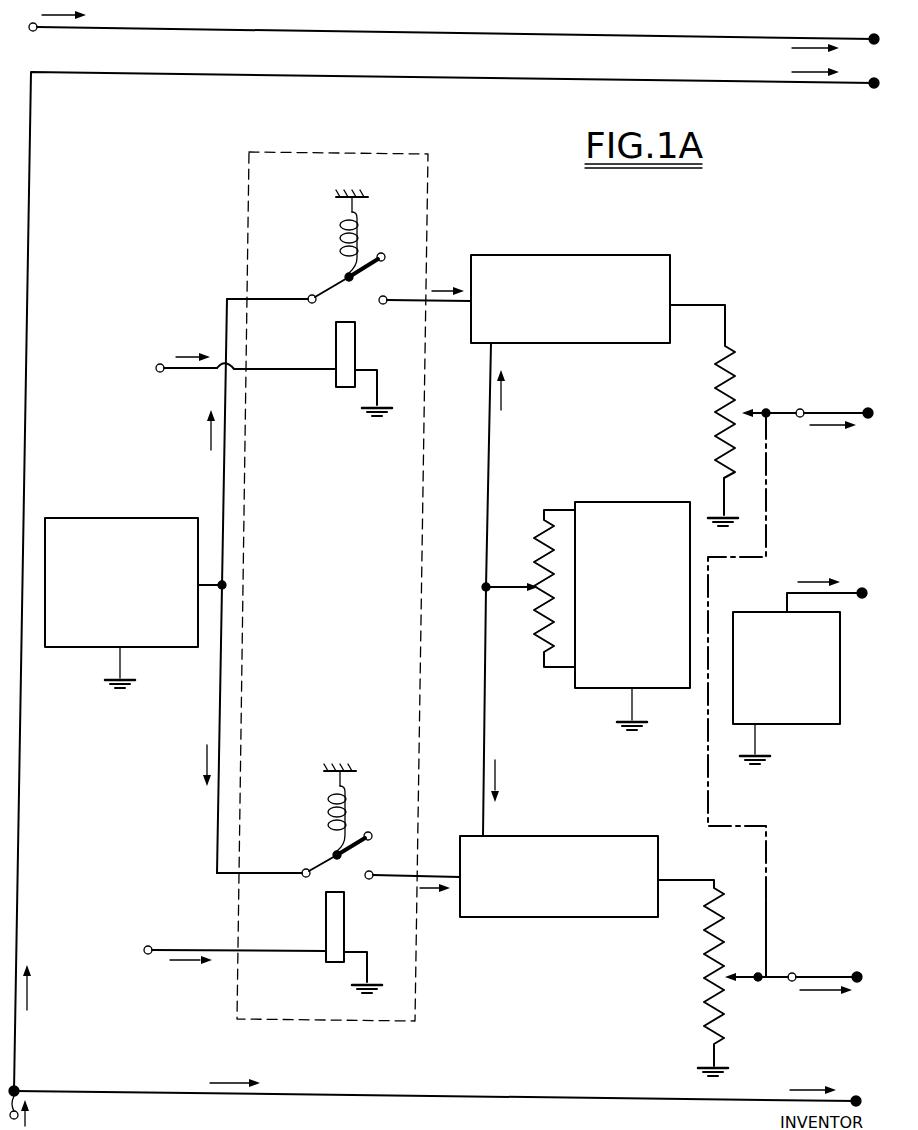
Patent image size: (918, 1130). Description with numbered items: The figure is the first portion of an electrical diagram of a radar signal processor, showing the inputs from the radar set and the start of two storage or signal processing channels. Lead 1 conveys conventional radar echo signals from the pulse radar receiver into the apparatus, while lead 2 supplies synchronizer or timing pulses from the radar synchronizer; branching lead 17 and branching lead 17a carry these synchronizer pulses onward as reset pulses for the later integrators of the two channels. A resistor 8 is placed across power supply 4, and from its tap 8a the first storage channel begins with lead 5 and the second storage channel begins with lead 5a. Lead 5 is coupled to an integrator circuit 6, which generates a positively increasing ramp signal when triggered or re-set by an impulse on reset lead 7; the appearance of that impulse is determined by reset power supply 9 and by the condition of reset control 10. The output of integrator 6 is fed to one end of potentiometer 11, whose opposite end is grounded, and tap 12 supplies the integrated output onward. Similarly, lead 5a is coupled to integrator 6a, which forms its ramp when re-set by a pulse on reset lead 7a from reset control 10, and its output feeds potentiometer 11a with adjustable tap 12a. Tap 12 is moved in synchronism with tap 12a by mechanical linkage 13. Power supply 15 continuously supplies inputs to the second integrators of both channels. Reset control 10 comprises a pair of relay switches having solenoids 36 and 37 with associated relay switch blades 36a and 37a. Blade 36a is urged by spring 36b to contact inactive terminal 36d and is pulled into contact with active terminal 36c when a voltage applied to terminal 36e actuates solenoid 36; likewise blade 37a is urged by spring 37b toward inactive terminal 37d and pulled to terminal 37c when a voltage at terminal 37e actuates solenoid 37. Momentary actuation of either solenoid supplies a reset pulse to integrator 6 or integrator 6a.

The lead 1 is at (656, 36).
The lead 2 is at (22, 1092).
The power supply 4 is at (632, 502).
The lead 5 is at (496, 440).
The lead 5a is at (488, 744).
The integrator circuit 6 is at (612, 256).
The integrator 6a is at (605, 836).
The reset lead 7 is at (446, 304).
The reset lead 7a is at (430, 875).
The resistor 8 is at (540, 530).
The tap 8a is at (508, 586).
The reset power supply 9 is at (116, 518).
The reset control 10 is at (240, 231).
The potentiometer 11 is at (730, 356).
The potentiometer 11a is at (710, 982).
The tap 12 is at (782, 412).
The tap 12a is at (775, 975).
The mechanical linkage 13 is at (706, 746).
The power supply 15 is at (790, 724).
The branching lead 17 is at (163, 75).
The branching lead 17a is at (405, 1084).
The solenoid 36 is at (356, 342).
The relay switch blade 36a is at (333, 290).
The spring 36b is at (342, 246).
The active terminal 36c is at (384, 297).
The inactive terminal 36d is at (384, 251).
The terminal 36e is at (160, 364).
The solenoid 37 is at (345, 918).
The relay switch blade 37a is at (318, 868).
The spring 37b is at (330, 818).
The terminal 37c is at (404, 860).
The inactive terminal 37d is at (374, 828).
The terminal 37e is at (165, 940).